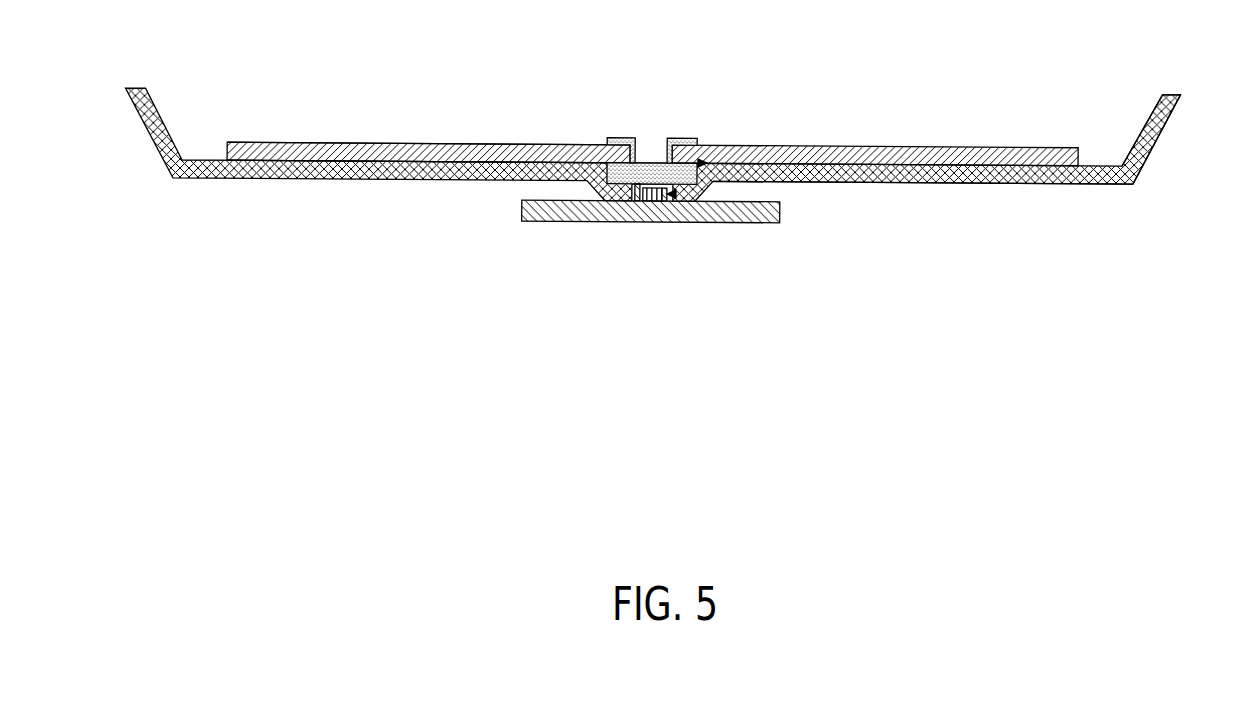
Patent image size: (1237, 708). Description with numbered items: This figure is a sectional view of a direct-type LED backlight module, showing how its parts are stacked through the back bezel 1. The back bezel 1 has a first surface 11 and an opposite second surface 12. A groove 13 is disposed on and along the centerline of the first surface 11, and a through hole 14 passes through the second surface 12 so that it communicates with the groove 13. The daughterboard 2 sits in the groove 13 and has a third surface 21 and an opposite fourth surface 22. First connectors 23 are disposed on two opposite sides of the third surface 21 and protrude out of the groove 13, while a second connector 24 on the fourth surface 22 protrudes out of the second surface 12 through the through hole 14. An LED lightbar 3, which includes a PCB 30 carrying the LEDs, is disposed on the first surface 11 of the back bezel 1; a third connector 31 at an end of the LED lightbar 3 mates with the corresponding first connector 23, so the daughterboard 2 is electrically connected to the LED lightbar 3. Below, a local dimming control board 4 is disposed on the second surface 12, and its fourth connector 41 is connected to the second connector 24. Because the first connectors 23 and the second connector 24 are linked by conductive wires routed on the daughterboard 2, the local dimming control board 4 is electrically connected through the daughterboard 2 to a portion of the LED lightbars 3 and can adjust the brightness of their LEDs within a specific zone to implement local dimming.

The back bezel 1 is at (1048, 175).
The first surface 11 is at (1143, 168).
The second surface 12 is at (1105, 187).
The groove 13 is at (702, 161).
The through hole 14 is at (676, 194).
The daughterboard 2 is at (651, 103).
The third surface 21 is at (642, 163).
The fourth surface 22 is at (637, 200).
The first connector 23 is at (620, 140).
The second connector 24 is at (652, 199).
The LED lightbar 3 is at (433, 147).
The PCB 30 is at (490, 143).
The third connector 31 is at (580, 153).
The local dimming control board 4 is at (672, 210).
The fourth connector 41 is at (664, 200).